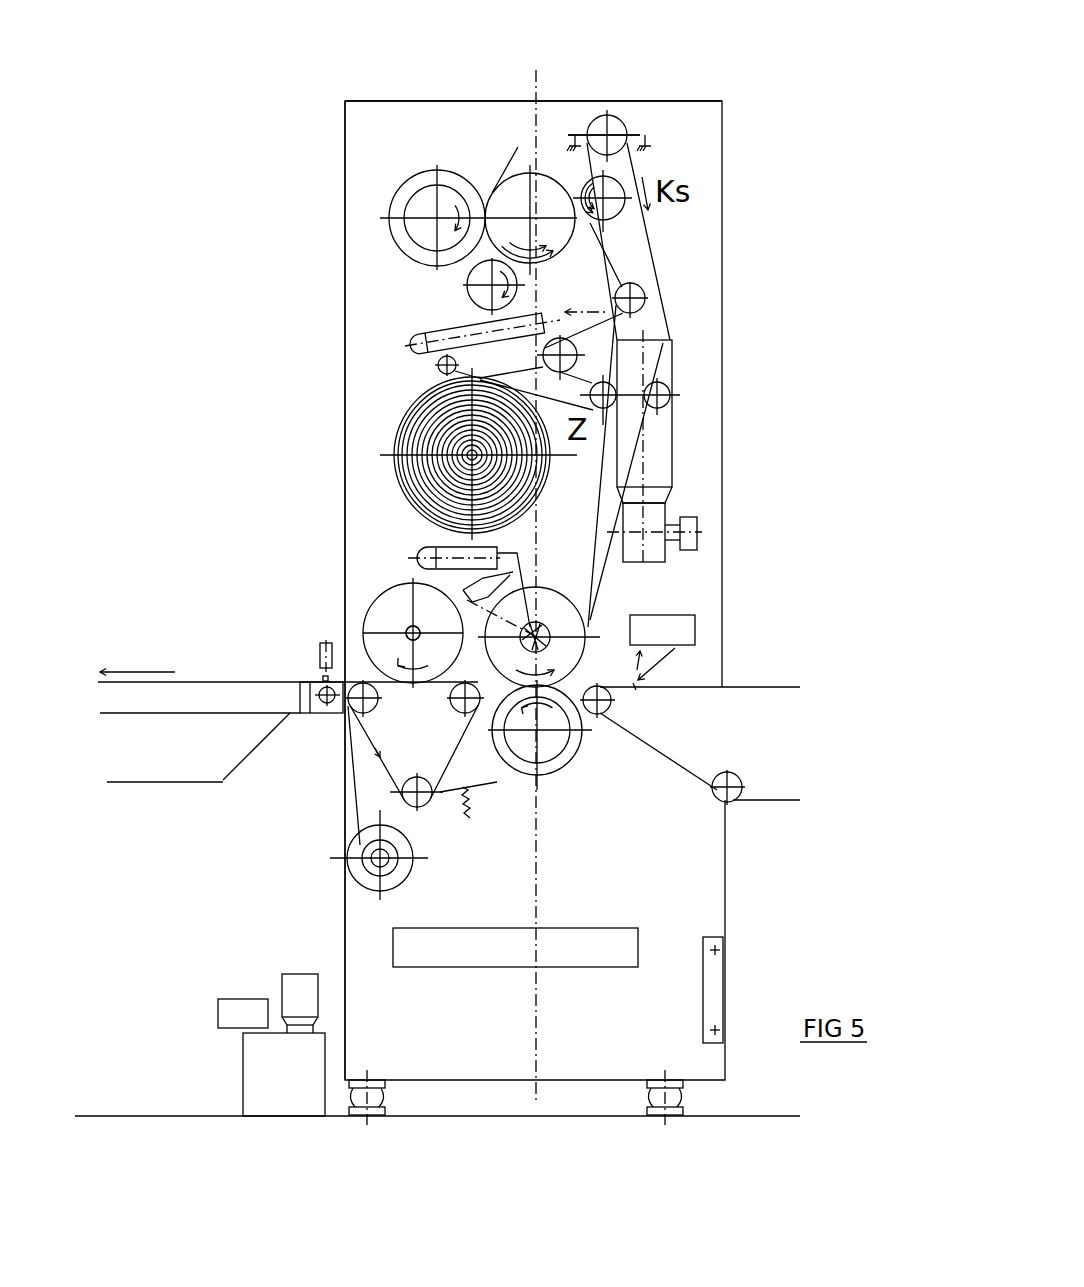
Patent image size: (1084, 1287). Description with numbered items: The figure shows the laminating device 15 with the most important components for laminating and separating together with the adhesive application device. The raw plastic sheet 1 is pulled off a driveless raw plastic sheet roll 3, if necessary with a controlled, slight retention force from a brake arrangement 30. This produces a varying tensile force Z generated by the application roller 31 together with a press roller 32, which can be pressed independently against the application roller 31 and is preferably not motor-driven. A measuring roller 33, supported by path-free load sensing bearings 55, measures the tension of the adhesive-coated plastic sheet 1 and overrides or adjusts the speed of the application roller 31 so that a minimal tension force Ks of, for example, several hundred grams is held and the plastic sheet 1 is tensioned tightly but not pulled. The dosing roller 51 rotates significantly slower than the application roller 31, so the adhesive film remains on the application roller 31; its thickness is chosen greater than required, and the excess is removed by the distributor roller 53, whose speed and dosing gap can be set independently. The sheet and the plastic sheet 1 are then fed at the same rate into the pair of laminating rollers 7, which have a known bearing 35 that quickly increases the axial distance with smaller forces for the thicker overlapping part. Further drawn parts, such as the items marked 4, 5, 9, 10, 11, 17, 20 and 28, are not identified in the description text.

The raw plastic sheet 1 is at (663, 320).
The raw plastic sheet roll 3 is at (410, 422).
The unwinding device 4 is at (458, 127).
The roller 5 is at (487, 192).
The laminating rollers 7 is at (547, 588).
The roller 9 is at (362, 607).
The hub 10 is at (434, 647).
The conveyor 11 is at (138, 687).
The laminating device 15 is at (258, 463).
The sensor 17 is at (318, 650).
The roller 20 is at (550, 763).
The sensor 28 is at (690, 625).
The brake arrangement 30 is at (437, 367).
The application roller 31 is at (522, 183).
The press roller 32 is at (623, 223).
The measuring roller 33 is at (617, 114).
The bearing 35 is at (450, 543).
The dosing roller 51 is at (418, 180).
The distributor roller 53 is at (467, 285).
The load sensing bearings 55 is at (647, 143).